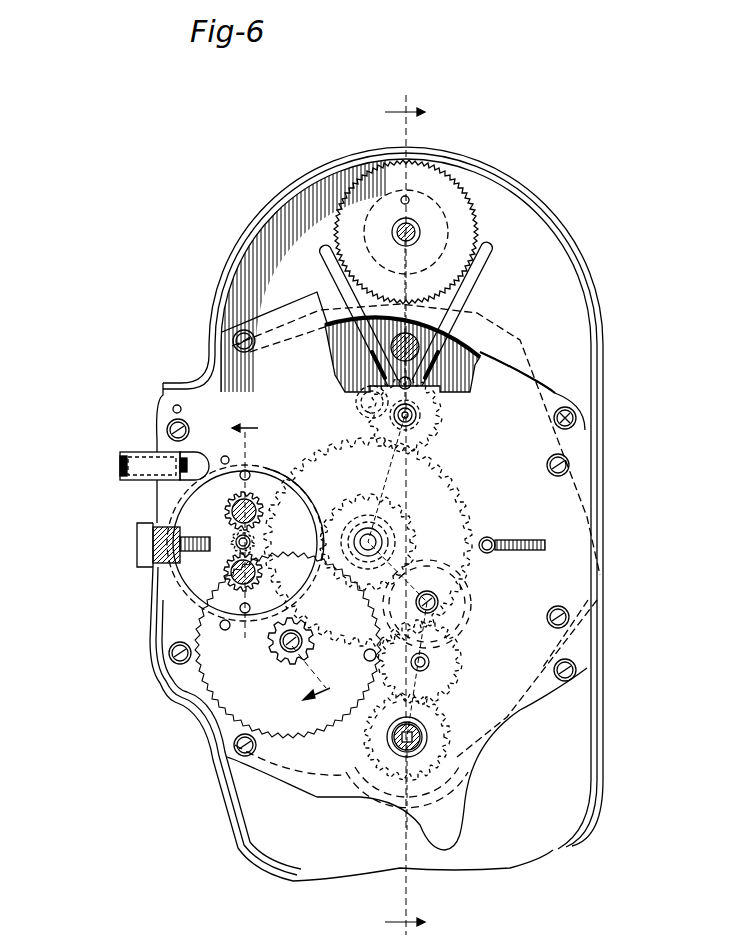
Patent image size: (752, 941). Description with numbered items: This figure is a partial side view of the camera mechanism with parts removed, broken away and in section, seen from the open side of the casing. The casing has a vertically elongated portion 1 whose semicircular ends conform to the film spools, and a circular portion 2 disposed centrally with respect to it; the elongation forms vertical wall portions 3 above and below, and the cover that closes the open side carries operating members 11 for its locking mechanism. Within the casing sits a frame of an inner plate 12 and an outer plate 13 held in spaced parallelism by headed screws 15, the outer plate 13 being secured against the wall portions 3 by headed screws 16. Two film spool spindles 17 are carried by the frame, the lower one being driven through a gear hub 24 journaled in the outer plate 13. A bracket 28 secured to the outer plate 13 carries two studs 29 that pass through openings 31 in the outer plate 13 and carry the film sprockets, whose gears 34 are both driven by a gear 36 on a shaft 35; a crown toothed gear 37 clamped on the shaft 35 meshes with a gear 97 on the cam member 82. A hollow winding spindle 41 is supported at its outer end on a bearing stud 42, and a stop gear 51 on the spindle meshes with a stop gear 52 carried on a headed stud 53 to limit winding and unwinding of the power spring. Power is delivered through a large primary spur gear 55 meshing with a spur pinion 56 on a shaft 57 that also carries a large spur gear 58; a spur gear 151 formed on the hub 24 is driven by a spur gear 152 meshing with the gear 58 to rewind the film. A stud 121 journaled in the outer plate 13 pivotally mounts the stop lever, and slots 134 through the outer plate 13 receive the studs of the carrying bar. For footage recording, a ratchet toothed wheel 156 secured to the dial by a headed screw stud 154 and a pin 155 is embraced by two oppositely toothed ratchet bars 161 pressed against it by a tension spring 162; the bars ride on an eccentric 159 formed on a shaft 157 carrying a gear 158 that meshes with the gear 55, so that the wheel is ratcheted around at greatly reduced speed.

The casing portion 1 is at (537, 203).
The casing portion 2 is at (488, 362).
The vertical wall portions 3 is at (548, 250).
The operating members 11 is at (397, 514).
The inner plate 12 is at (603, 262).
The outer plate 13 is at (555, 497).
The headed screws 15 is at (170, 428).
The headed screws 16 is at (236, 342).
The film spool spindles 17 is at (446, 355).
The gear hub 24 is at (372, 780).
The bracket 28 is at (240, 546).
The studs 29 is at (240, 508).
The openings 31 is at (240, 500).
The gears 34 is at (240, 520).
The shaft 35 is at (272, 478).
The gear 36 is at (303, 470).
The crown toothed gear 37 is at (178, 455).
The winding spindle 41 is at (384, 530).
The bearing stud 42 is at (455, 518).
The stop gear 51 is at (395, 522).
The stop gear 52 is at (458, 592).
The headed stud 53 is at (440, 602).
The primary spur gear 55 is at (488, 538).
The spur pinion 56 is at (287, 662).
The shaft 57 is at (283, 645).
The spur gear 58 is at (225, 628).
The cam member 82 is at (150, 545).
The gear 97 is at (185, 546).
The stud 121 is at (122, 462).
The slots 134 is at (142, 530).
The spur gear 151 is at (445, 722).
The spur gear 152 is at (455, 650).
The headed screw stud 154 is at (412, 228).
The pin 155 is at (404, 196).
The ratchet toothed wheel 156 is at (356, 196).
The shaft 157 is at (422, 413).
The gear 158 is at (442, 412).
The eccentric 159 is at (358, 404).
The ratchet bars 161 is at (486, 246).
The tension spring 162 is at (370, 365).